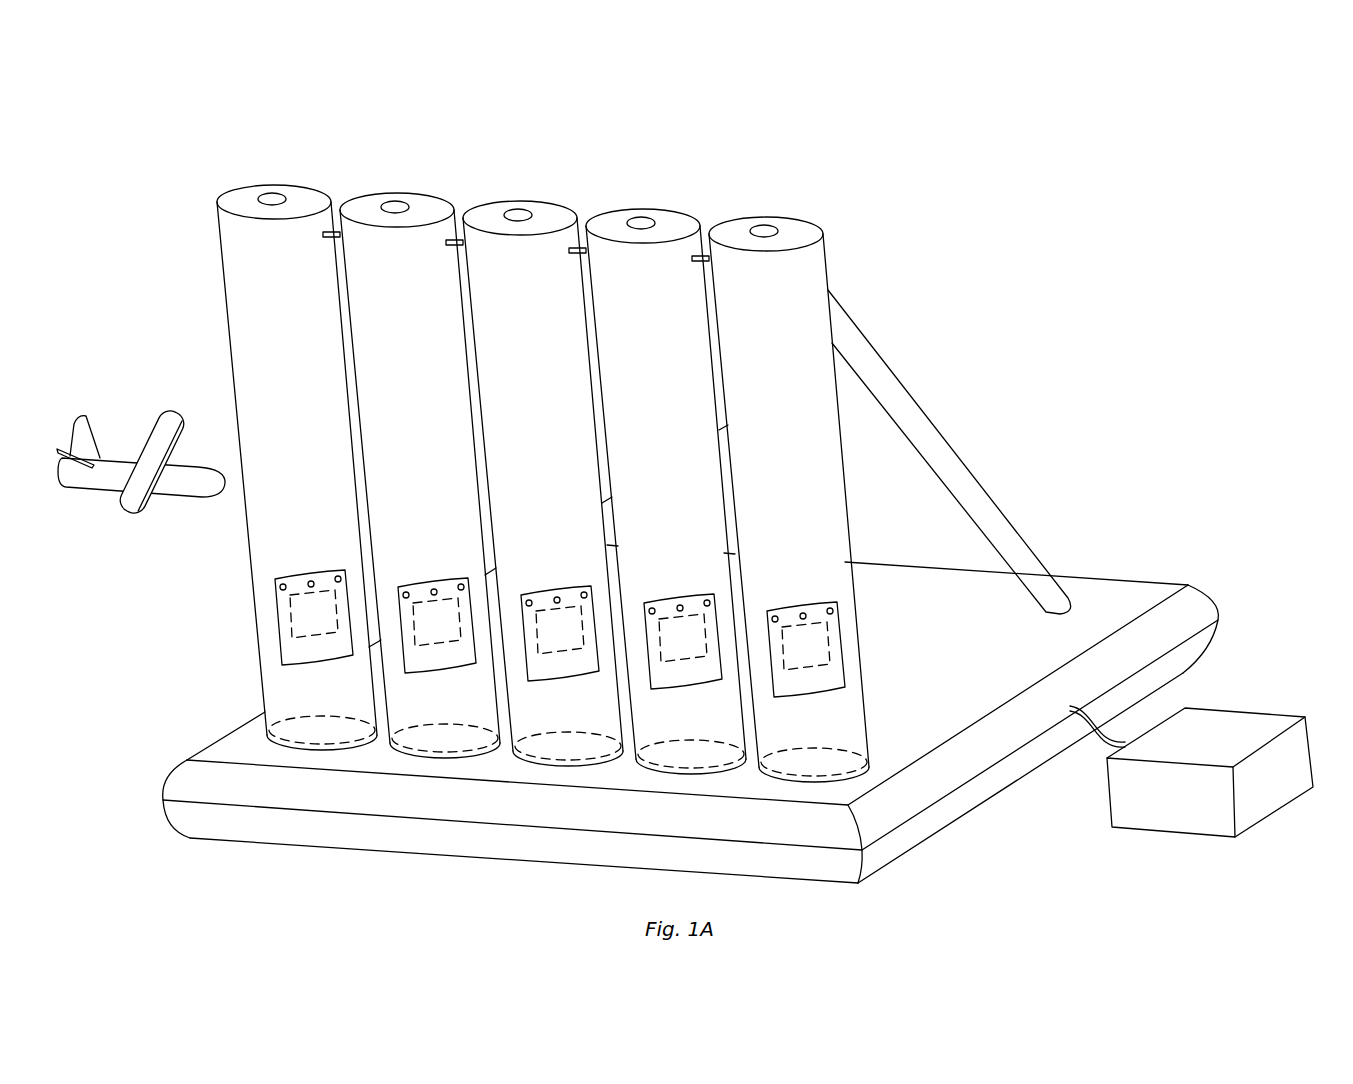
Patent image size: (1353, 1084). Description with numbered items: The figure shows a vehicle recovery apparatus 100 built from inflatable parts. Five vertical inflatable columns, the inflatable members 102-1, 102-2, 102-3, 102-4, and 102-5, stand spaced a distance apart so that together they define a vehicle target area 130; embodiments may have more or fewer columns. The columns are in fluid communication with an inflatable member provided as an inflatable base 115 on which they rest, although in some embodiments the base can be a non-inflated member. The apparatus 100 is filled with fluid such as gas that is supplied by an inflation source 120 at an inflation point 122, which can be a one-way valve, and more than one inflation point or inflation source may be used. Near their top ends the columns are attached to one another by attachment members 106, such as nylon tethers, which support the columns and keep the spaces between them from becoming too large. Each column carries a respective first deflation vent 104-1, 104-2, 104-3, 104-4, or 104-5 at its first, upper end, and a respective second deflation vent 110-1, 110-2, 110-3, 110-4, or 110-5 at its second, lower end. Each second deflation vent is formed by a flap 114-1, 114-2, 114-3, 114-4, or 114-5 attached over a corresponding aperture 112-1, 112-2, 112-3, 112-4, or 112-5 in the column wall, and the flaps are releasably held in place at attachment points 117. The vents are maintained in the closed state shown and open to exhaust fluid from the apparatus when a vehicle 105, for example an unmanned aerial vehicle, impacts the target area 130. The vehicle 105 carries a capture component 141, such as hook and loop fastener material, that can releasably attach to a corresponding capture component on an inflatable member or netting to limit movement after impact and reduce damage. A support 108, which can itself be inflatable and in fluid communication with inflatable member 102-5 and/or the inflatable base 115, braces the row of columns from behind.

The vehicle recovery apparatus 100 is at (195, 153).
The inflatable member 102-1 is at (308, 192).
The inflatable member 102-2 is at (420, 460).
The inflatable member 102-3 is at (543, 468).
The inflatable member 102-4 is at (666, 476).
The inflatable member 102-5 is at (789, 484).
The first deflation vent 104-1 is at (268, 199).
The first deflation vent 104-2 is at (429, 176).
The first deflation vent 104-3 is at (552, 184).
The first deflation vent 104-4 is at (675, 192).
The first deflation vent 104-5 is at (798, 200).
The attachment member 106 is at (323, 234).
The vehicle 105 is at (147, 452).
The capture component 141 is at (226, 485).
The support 108 is at (942, 440).
The vehicle target area 130 is at (870, 530).
The second deflation vent 110-1 is at (312, 608).
The second deflation vent 110-2 is at (435, 616).
The second deflation vent 110-3 is at (558, 624).
The second deflation vent 110-4 is at (681, 632).
The second deflation vent 110-5 is at (804, 640).
The aperture 112-1 is at (307, 623).
The aperture 112-2 is at (435, 652).
The aperture 112-3 is at (558, 660).
The aperture 112-4 is at (681, 668).
The aperture 112-5 is at (804, 676).
The flap 114-1 is at (316, 651).
The flap 114-2 is at (444, 649).
The flap 114-3 is at (567, 657).
The flap 114-4 is at (690, 665).
The flap 114-5 is at (813, 673).
The attachment point 117 is at (284, 584).
The inflatable base 115 is at (918, 797).
The inflation point 122 is at (1072, 706).
The inflation source 120 is at (1241, 717).